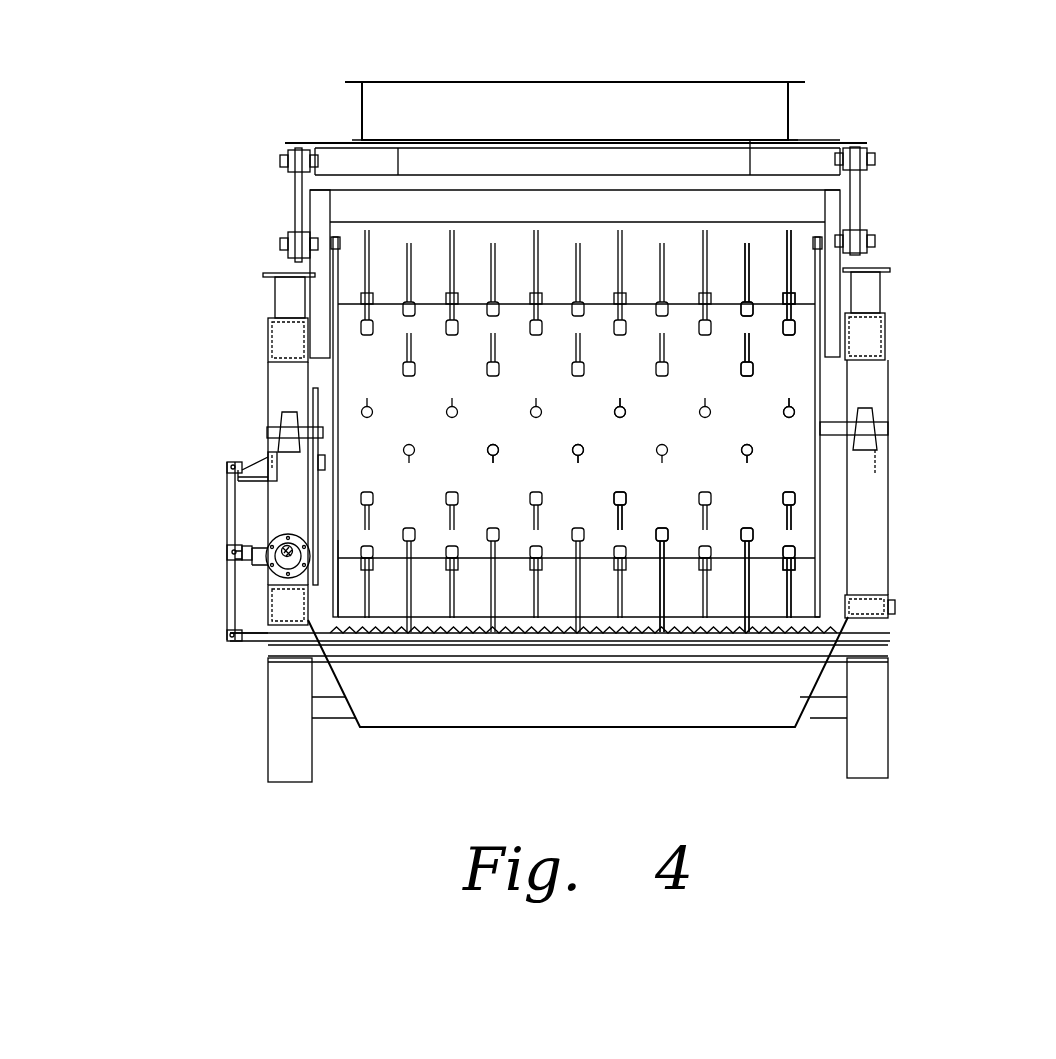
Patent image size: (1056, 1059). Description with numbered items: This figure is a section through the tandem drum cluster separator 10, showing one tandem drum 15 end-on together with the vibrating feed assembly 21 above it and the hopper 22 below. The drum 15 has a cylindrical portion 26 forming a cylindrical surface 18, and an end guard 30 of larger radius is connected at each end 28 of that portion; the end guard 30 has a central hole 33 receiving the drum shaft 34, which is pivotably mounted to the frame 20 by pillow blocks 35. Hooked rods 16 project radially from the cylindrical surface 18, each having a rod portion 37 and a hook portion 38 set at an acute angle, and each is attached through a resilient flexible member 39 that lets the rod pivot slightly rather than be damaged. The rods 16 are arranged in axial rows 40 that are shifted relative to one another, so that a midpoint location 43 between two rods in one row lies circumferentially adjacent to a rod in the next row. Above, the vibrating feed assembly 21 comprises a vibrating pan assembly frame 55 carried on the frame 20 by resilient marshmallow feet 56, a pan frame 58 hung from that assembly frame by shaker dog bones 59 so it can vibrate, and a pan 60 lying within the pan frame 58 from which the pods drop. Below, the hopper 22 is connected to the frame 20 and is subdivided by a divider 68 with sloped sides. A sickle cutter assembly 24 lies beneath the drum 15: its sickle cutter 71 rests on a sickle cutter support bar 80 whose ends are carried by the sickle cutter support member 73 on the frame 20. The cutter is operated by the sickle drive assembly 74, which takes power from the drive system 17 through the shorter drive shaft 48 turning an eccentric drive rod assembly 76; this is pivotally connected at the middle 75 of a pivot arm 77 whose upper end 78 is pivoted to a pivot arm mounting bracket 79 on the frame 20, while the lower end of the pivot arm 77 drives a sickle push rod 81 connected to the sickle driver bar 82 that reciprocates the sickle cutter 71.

The tandem drum cluster separator 10 is at (333, 375).
The tandem drum 15 is at (820, 380).
The hooked rod 16 is at (707, 253).
The drive system 17 is at (305, 540).
The cylindrical surface 18 is at (598, 416).
The frame 20 is at (887, 505).
The vibrating feed assembly 21 is at (790, 108).
The hopper 22 is at (585, 727).
The sickle cutter assembly 24 is at (528, 640).
The cylindrical portion 26 is at (641, 562).
The end 28 is at (342, 558).
The end guard 30 is at (340, 390).
The central hole 33 is at (335, 423).
The drum shaft 34 is at (330, 450).
The pillow block 35 is at (268, 443).
The rod portion 37 is at (537, 272).
The hook portion 38 is at (625, 405).
The resilient flexible member 39 is at (618, 497).
The row 40 is at (800, 328).
The midpoint location 43 is at (510, 420).
The shorter drive shaft 48 is at (330, 565).
The vibrating pan assembly frame 55 is at (315, 266).
The resilient marshmallow feet 56 is at (275, 303).
The pan frame 58 is at (330, 142).
The shaker dog bone 59 is at (293, 200).
The pan 60 is at (483, 82).
The divider 68 is at (728, 660).
The sickle cutter 71 is at (685, 633).
The sickle cutter support member 73 is at (890, 608).
The sickle drive assembly 74 is at (223, 558).
The middle of pivot arm 75 is at (223, 550).
The eccentric drive rod assembly 76 is at (253, 555).
The pivot arm 77 is at (227, 518).
The upper end of pivot arm 78 is at (227, 465).
The pivot arm mounting bracket 79 is at (272, 483).
The sickle cutter support bar 80 is at (278, 658).
The sickle push rod 81 is at (250, 632).
The sickle driver bar 82 is at (495, 637).